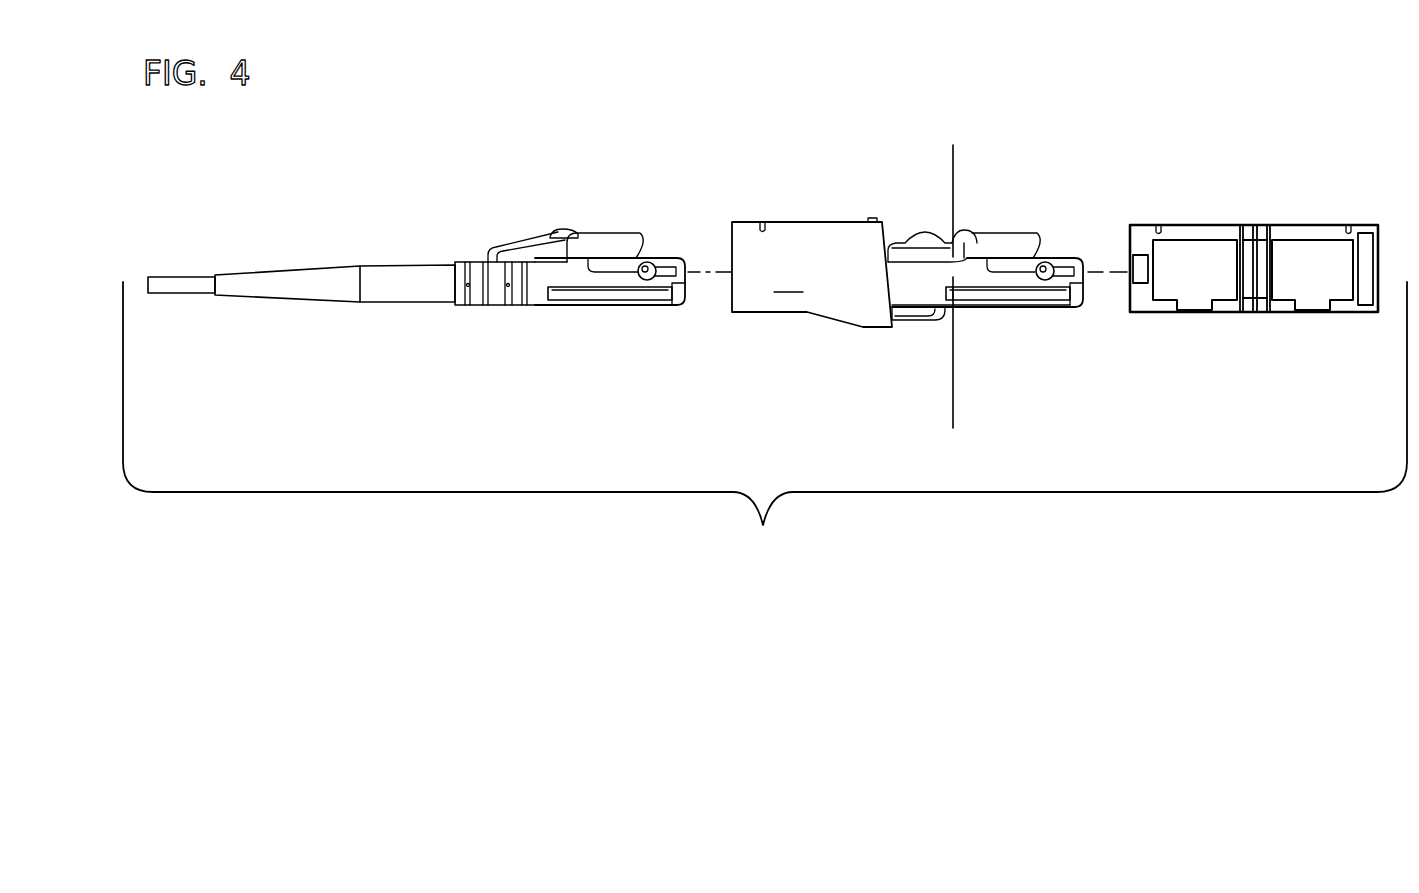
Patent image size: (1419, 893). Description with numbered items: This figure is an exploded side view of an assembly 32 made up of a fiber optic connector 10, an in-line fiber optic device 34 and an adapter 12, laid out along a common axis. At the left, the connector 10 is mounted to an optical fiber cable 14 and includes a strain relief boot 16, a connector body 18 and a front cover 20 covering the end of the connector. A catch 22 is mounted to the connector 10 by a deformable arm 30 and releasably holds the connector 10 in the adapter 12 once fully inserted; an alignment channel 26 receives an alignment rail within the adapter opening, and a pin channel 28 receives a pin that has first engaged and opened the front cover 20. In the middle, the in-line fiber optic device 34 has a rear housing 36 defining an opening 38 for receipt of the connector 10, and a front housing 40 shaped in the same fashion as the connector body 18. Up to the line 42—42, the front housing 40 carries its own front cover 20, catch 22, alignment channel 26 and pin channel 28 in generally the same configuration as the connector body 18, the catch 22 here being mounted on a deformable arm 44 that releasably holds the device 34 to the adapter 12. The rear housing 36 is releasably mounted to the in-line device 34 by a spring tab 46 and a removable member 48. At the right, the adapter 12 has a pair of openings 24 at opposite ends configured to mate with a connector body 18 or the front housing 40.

The fiber optic connector 10 is at (628, 305).
The adapter 12 is at (1180, 340).
The optical fiber cable 14 is at (177, 290).
The strain relief boot 16 is at (388, 292).
The connector body 18 is at (567, 275).
The front cover 20 is at (680, 303).
The catch 22 is at (565, 228).
The opening 24 is at (1115, 237).
The alignment channel 26 is at (620, 292).
The pin channel 28 is at (618, 258).
The deformable arm 30 is at (495, 246).
The assembly 32 is at (765, 422).
The in-line fiber optic device 34 is at (812, 204).
The rear housing 36 is at (788, 281).
The opening 38 is at (722, 243).
The front housing 40 is at (977, 282).
The line 42 is at (954, 286).
The deformable arm 44 is at (925, 233).
The spring tab 46 is at (907, 318).
The removable member 48 is at (875, 218).